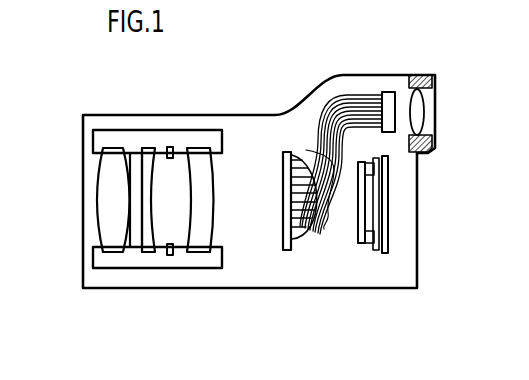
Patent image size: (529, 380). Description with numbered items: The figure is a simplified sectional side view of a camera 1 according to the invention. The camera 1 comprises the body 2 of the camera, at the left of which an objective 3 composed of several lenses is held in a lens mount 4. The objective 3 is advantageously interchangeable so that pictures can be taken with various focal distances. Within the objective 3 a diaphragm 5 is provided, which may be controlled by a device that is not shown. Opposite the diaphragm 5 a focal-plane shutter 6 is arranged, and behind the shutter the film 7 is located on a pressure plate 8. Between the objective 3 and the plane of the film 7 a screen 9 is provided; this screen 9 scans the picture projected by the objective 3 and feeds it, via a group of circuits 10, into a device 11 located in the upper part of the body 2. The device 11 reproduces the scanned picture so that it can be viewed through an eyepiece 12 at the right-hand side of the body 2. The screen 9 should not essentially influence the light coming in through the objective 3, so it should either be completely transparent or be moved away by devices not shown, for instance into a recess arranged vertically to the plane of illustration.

The camera 1 is at (270, 44).
The body 2 is at (383, 290).
The objective 3 is at (93, 193).
The lens mount 4 is at (112, 140).
The diaphragm 5 is at (170, 146).
The focal-plane shutter 6 is at (358, 243).
The film 7 is at (386, 187).
The pressure plate 8 is at (383, 215).
The screen 9 is at (285, 197).
The group of circuits 10 is at (323, 206).
The device 11 is at (385, 92).
The eyepiece 12 is at (420, 108).